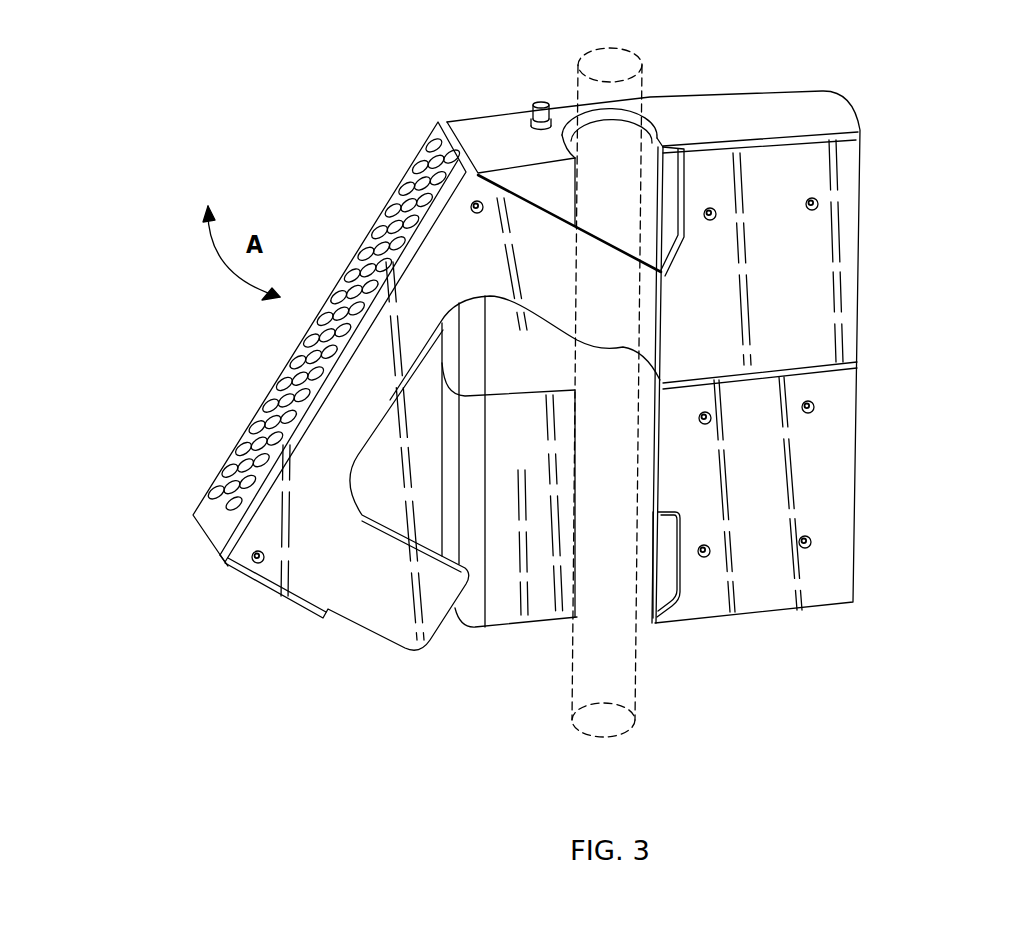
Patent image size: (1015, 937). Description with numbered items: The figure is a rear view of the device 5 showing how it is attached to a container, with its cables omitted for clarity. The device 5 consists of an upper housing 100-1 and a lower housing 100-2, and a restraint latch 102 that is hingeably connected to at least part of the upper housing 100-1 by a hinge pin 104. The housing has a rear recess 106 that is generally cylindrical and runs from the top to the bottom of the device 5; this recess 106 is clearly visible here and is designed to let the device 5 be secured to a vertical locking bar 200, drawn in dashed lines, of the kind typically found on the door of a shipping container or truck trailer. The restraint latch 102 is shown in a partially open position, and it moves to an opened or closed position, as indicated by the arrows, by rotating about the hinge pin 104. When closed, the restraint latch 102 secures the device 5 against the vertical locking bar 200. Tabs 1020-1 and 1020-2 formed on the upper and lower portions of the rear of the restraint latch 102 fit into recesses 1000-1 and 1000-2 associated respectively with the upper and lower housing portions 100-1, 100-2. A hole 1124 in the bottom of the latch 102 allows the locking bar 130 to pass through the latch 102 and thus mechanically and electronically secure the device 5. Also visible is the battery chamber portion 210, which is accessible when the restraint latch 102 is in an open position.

The device 5 is at (862, 243).
The upper housing 100-1 is at (838, 108).
The lower housing 100-2 is at (856, 494).
The recess 1000-1 is at (677, 187).
The recess 1000-2 is at (677, 585).
The tab 1020-1 is at (617, 271).
The tab 1020-2 is at (382, 613).
The locking bar 130 is at (540, 110).
The hinge pin 104 is at (470, 208).
The restraint latch 102 is at (252, 558).
The hole 1124 is at (226, 566).
The battery chamber portion 210 is at (564, 498).
The rear recess 106 is at (613, 500).
The vertical locking bar 200 is at (642, 652).